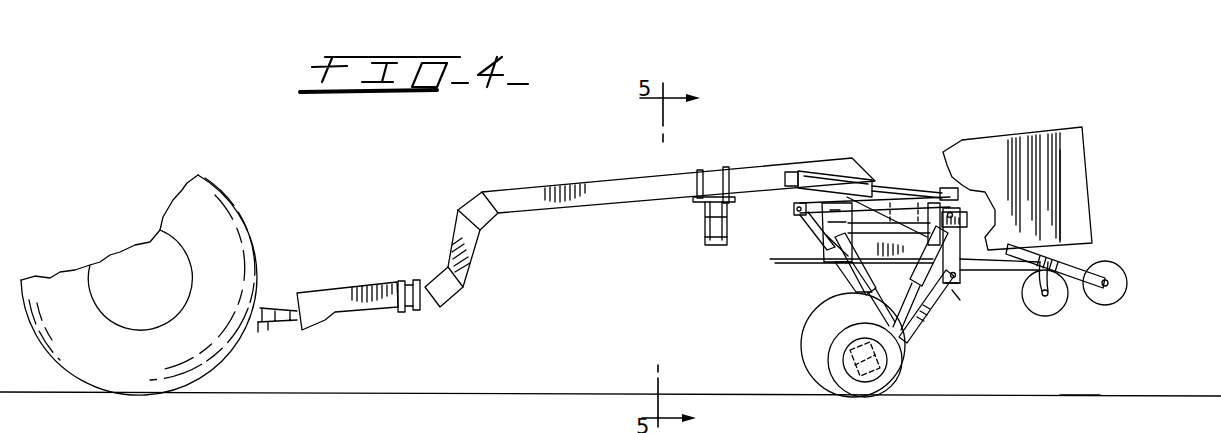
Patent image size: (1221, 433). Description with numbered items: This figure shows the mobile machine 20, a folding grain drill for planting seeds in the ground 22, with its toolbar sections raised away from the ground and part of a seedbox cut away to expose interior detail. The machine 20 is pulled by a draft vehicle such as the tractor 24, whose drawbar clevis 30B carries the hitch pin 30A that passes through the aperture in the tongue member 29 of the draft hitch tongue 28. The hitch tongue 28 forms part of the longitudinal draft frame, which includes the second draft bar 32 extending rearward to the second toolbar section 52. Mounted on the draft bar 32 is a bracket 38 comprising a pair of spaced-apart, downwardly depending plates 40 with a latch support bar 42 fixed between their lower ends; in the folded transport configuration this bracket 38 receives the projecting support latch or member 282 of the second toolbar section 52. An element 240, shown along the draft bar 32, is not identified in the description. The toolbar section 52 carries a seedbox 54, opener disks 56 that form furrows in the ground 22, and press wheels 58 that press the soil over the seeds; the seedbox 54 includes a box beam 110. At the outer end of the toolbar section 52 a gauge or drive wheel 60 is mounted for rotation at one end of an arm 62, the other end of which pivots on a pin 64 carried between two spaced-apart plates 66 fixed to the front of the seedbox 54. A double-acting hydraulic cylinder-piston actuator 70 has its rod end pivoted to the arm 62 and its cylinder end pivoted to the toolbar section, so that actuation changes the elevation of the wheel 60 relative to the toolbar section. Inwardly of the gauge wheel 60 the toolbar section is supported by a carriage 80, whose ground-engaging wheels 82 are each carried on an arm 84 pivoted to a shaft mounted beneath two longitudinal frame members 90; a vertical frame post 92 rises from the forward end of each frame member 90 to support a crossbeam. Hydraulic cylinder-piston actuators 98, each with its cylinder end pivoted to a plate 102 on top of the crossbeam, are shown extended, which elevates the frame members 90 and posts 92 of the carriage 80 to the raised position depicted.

The mobile machine 20 is at (1132, 106).
The ground 22 is at (1075, 393).
The tractor 24 is at (258, 204).
The draft hitch tongue 28 is at (374, 288).
The tongue member 29 is at (292, 322).
The hitch pin 30A is at (278, 322).
The drawbar clevis 30B is at (258, 325).
The second draft bar 32 is at (528, 200).
The bracket 38 is at (736, 163).
The plates 40 is at (705, 210).
The latch support bar 42 is at (720, 242).
The second toolbar section 52 is at (1095, 158).
The seedbox 54 is at (1083, 198).
The opener disks 56 is at (1040, 312).
The press wheels 58 is at (1105, 305).
The gauge or drive wheel 60 is at (893, 382).
The arm 62 is at (920, 327).
The pin 64 is at (954, 290).
The plates 66 is at (952, 302).
The hydraulic cylinder-piston actuator 70 is at (913, 266).
The carriage 80 is at (816, 275).
The ground-engaging wheels 82 is at (806, 348).
The arm 84 is at (880, 299).
The longitudinal frame members 90 is at (845, 280).
The vertical frame post 92 is at (820, 257).
The hydraulic cylinder-piston actuators 98 is at (810, 233).
The plate 102 is at (796, 201).
The box beam 110 is at (981, 252).
The boom cylinder 240 is at (814, 179).
The support latch or member 282 is at (965, 222).